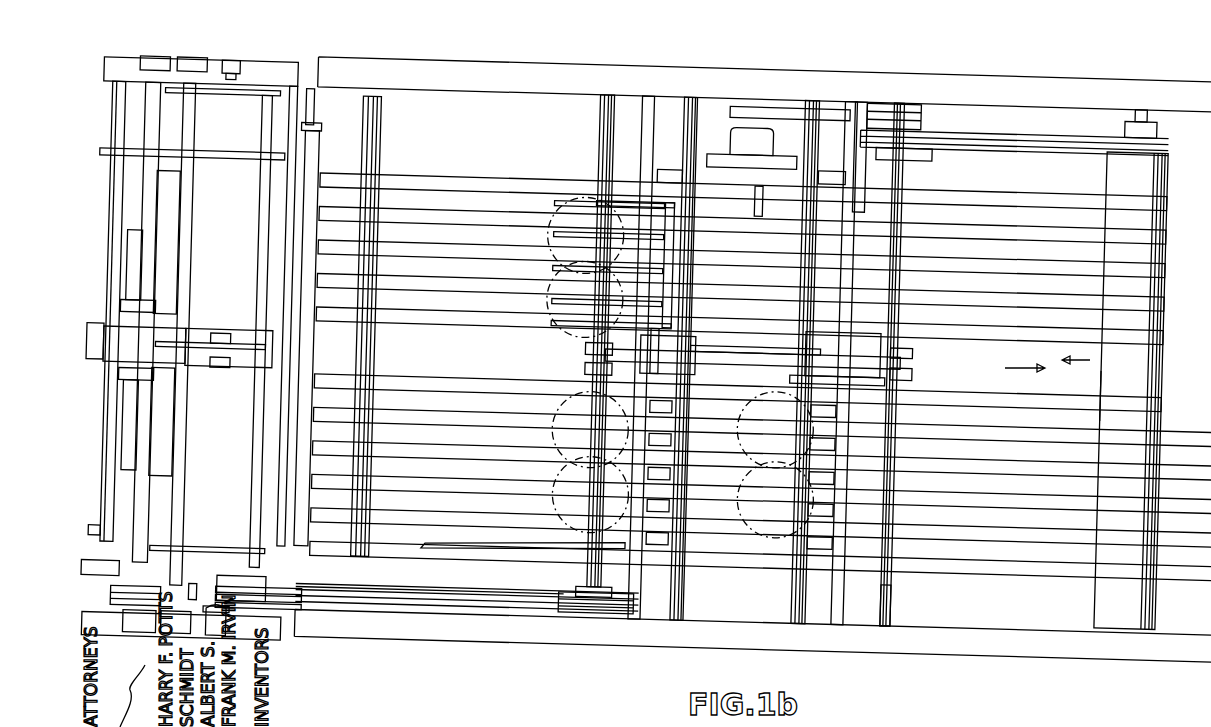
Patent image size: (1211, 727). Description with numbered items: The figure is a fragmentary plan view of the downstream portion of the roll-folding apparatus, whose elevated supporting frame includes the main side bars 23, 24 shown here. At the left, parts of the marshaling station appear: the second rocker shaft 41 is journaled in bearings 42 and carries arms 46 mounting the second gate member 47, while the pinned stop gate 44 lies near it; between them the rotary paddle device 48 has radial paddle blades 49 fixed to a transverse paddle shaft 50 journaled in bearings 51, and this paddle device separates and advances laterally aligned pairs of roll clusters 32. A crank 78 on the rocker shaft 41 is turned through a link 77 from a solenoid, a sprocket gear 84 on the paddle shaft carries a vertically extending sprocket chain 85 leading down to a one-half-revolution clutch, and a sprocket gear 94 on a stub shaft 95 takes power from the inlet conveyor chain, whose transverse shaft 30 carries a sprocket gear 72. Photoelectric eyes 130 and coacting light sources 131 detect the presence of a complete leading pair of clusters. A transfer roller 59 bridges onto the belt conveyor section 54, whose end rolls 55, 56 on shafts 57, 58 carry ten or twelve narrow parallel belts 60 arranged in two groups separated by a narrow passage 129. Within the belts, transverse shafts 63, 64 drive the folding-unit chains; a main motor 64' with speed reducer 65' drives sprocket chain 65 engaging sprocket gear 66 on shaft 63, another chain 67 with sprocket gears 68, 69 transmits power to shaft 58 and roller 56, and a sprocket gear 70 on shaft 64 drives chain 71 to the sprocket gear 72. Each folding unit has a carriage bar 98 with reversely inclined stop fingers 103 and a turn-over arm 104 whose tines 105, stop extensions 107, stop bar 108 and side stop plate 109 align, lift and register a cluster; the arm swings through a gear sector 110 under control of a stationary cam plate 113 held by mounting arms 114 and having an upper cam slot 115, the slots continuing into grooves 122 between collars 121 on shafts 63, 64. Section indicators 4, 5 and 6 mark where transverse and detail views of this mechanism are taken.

The main side bar 24 is at (566, 62).
The main side bar 23 is at (543, 635).
The transfer roller 59 is at (298, 240).
The end roll 55 is at (378, 141).
The shaft 57 is at (345, 562).
The belt conveyor section 54 is at (473, 166).
The belts 60 is at (438, 396).
The end roll 56 is at (1160, 178).
The sprocket chain 67 is at (1010, 135).
The sprocket gear 69 is at (1112, 130).
The shaft 58 is at (1140, 110).
The sprocket gear 66 is at (905, 110).
The sprocket gear 68 is at (915, 155).
The sprocket chain 65 is at (797, 125).
The speed reducer 65' is at (749, 148).
The carriage bar 98 is at (668, 172).
The mounting arms 114 is at (675, 100).
The shaft 63 is at (900, 585).
The shaft 64 is at (583, 345).
The main motor 64' is at (761, 199).
The stop bar 108 is at (680, 217).
The turn-over arm 104 is at (695, 266).
The roll clusters 32 is at (545, 244).
The tines 105 is at (565, 200).
The side stop plate 109 is at (590, 345).
The upper cam slot 115 is at (700, 365).
The cam plate 113 is at (742, 350).
The gear sector 110 is at (826, 342).
The stop extensions 107 is at (835, 385).
The collars 121 is at (595, 368).
The groove 122 is at (595, 350).
The passage 129 is at (1110, 367).
The stop fingers 103 is at (670, 418).
The sprocket gear 70 is at (600, 625).
The chain 71 is at (452, 615).
The stop gate 44 is at (122, 92).
The bearings 51 is at (160, 62).
The bearings 42 is at (195, 63).
The photoelectric eyes 130 is at (234, 62).
The arms 46 is at (262, 88).
The paddle shaft 50 is at (165, 133).
The paddle blades 49 is at (178, 205).
The rotary paddle device 48 is at (178, 412).
The second gate member 47 is at (265, 204).
The rocker shaft 41 is at (193, 448).
The light sources 131 is at (233, 347).
The stub shaft 95 is at (102, 538).
The sprocket gear 94 is at (116, 565).
The sprocket chain 85 is at (158, 590).
The crank 78 is at (196, 575).
The link 77 is at (211, 583).
The transverse shaft 30 is at (245, 580).
The sprocket gear 84 is at (122, 618).
The sprocket gear 72 is at (229, 615).
The section line 4 is at (297, 528).
The section line 5 is at (735, 58).
The section line 6 is at (668, 290).